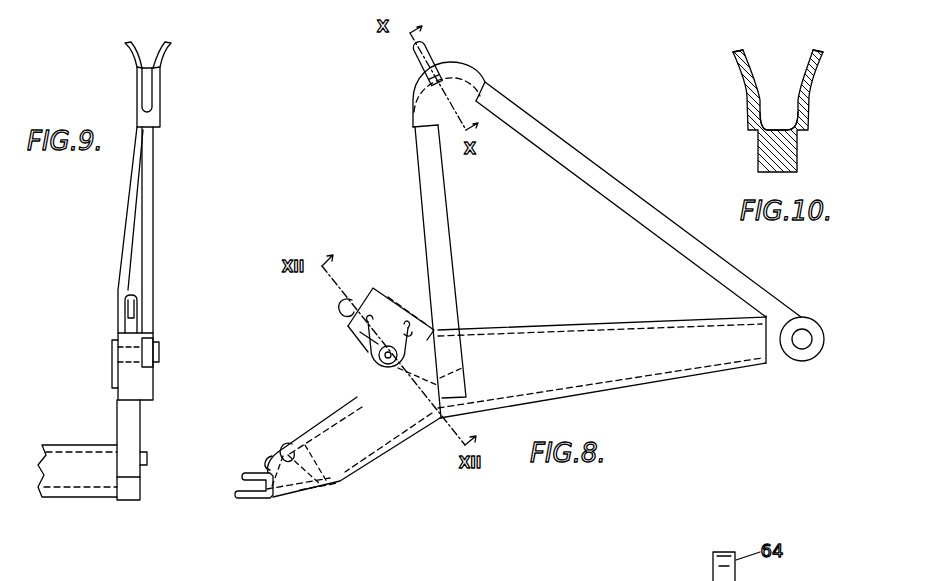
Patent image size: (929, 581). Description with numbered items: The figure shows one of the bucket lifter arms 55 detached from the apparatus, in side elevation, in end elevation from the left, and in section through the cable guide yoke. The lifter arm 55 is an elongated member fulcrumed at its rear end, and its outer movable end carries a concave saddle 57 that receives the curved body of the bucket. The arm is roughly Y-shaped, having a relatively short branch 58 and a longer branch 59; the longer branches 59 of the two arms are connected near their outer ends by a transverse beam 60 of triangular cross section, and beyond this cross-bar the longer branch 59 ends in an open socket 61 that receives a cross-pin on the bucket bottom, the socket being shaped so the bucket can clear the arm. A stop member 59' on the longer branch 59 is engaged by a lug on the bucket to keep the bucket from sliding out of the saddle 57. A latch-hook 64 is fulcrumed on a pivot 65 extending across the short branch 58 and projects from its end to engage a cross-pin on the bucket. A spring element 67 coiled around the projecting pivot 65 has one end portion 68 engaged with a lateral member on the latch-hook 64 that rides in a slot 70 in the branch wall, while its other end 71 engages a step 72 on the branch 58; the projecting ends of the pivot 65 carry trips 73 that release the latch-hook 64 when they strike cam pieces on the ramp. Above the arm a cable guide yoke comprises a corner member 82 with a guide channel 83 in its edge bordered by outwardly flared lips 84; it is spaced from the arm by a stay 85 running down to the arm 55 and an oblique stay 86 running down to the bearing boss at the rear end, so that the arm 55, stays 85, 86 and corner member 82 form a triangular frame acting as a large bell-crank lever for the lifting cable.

In FIG. 8, the lifter arm 55 is at (622, 370).
In FIG. 8, the concave saddle 57 is at (355, 395).
In FIG. 8, the short branch 58 is at (385, 291).
In FIG. 8, the longer branch 59 is at (267, 440).
In FIG. 8, the stop member 59' is at (235, 455).
In FIG. 8, the transverse beam 60 is at (331, 486).
In FIG. 9, the transverse beam 60 is at (78, 462).
In FIG. 8, the open socket 61 is at (238, 485).
In FIG. 9, the open socket 61 is at (125, 482).
In FIG. 8, the latch-hook 64 is at (352, 301).
In FIG. 9, the latch-hook 64 is at (128, 307).
In FIG. 8, the pivot pin 65 is at (388, 366).
In FIG. 9, the pivot pin 65 is at (160, 352).
In FIG. 8, the spring element 67 is at (368, 360).
In FIG. 9, the spring element 67 is at (153, 365).
In FIG. 8, the spring end portion 68 is at (372, 340).
In FIG. 8, the slot 70 is at (385, 323).
In FIG. 8, the spring end 71 is at (412, 336).
In FIG. 8, the step 72 is at (406, 328).
In FIG. 8, the trip 73 is at (462, 368).
In FIG. 9, the trip 73 is at (112, 383).
In FIG. 8, the corner member 82 is at (470, 88).
In FIG. 9, the corner member 82 is at (160, 117).
In FIG. 10, the corner member 82 is at (790, 158).
In FIG. 9, the guide channel 83 is at (147, 68).
In FIG. 10, the guide channel 83 is at (770, 122).
In FIG. 8, the outwardly flared lip 84 is at (433, 60).
In FIG. 9, the outwardly flared lip 84 is at (128, 50).
In FIG. 10, the outwardly flared lip 84 is at (743, 73).
In FIG. 8, the stay 85 is at (432, 186).
In FIG. 9, the stay 85 is at (148, 190).
In FIG. 8, the stay 86 is at (651, 207).
In FIG. 9, the stay 86 is at (122, 246).